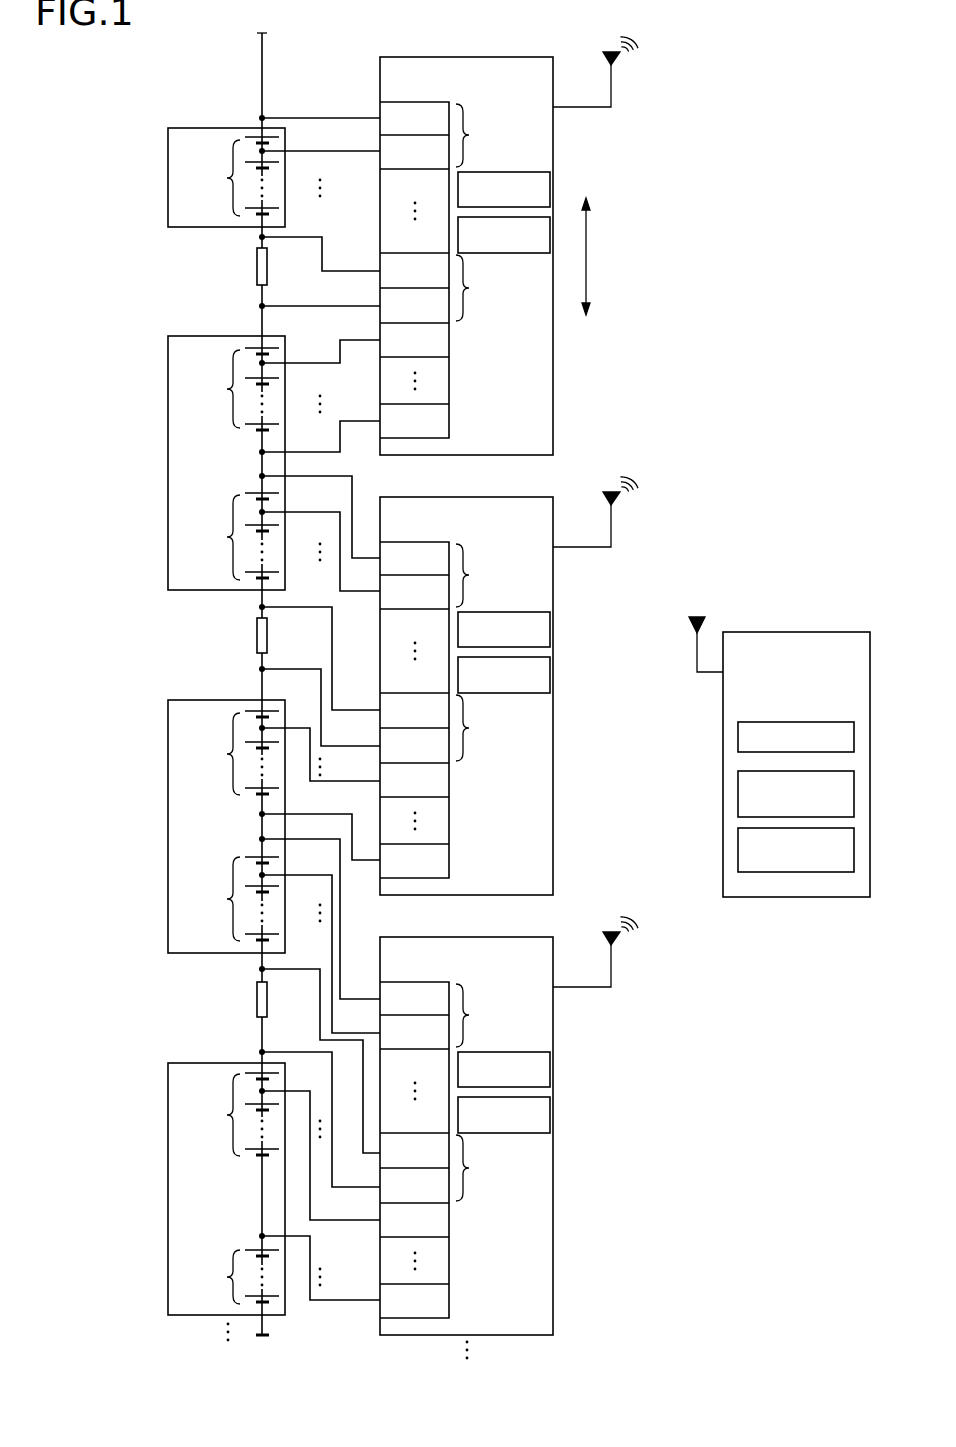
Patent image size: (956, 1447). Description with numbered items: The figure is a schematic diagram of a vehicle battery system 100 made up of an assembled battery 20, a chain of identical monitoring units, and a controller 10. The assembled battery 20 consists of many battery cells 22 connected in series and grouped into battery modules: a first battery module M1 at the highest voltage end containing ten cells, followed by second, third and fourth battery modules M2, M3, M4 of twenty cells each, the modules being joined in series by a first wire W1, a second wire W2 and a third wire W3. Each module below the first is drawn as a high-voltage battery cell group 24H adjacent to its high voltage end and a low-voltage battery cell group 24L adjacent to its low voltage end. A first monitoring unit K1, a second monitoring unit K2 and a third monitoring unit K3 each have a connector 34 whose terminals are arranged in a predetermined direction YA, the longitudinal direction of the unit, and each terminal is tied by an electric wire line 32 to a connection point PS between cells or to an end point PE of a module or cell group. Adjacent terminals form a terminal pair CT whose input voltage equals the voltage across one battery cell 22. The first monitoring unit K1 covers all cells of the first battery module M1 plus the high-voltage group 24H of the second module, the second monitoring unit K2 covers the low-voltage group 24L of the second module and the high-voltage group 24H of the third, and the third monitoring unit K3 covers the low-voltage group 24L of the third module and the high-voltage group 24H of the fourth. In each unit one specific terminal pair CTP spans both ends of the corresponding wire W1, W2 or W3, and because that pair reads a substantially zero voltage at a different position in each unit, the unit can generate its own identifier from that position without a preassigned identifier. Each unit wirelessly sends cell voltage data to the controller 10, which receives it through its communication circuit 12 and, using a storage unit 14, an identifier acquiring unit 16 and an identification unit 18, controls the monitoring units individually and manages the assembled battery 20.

The controller 10 is at (853, 632).
The communication circuit 12 is at (694, 658).
The storage unit 14 is at (834, 722).
The identifier acquiring unit 16 is at (856, 793).
The identification unit 18 is at (856, 855).
The assembled battery 20 is at (287, 71).
The battery cell 22 is at (258, 132).
The electric wire line 32 is at (330, 118).
The connector 34 is at (450, 423).
The battery system 100 is at (815, 55).
The first monitoring unit K1 is at (486, 58).
The second monitoring unit K2 is at (486, 498).
The third monitoring unit K3 is at (486, 938).
The first battery module M1 is at (168, 213).
The second battery module M2 is at (168, 428).
The third battery module M3 is at (168, 791).
The fourth battery module M4 is at (168, 1154).
The first wire W1 is at (257, 266).
The second wire W2 is at (257, 636).
The third wire W3 is at (257, 999).
The high-voltage battery cell group 24H is at (207, 389).
The low-voltage battery cell group 24L is at (206, 537).
The end point PE is at (266, 121).
The connection point PS is at (265, 150).
The terminal pair CT is at (478, 135).
The specific terminal pair CTP is at (482, 288).
The predetermined direction YA is at (602, 256).